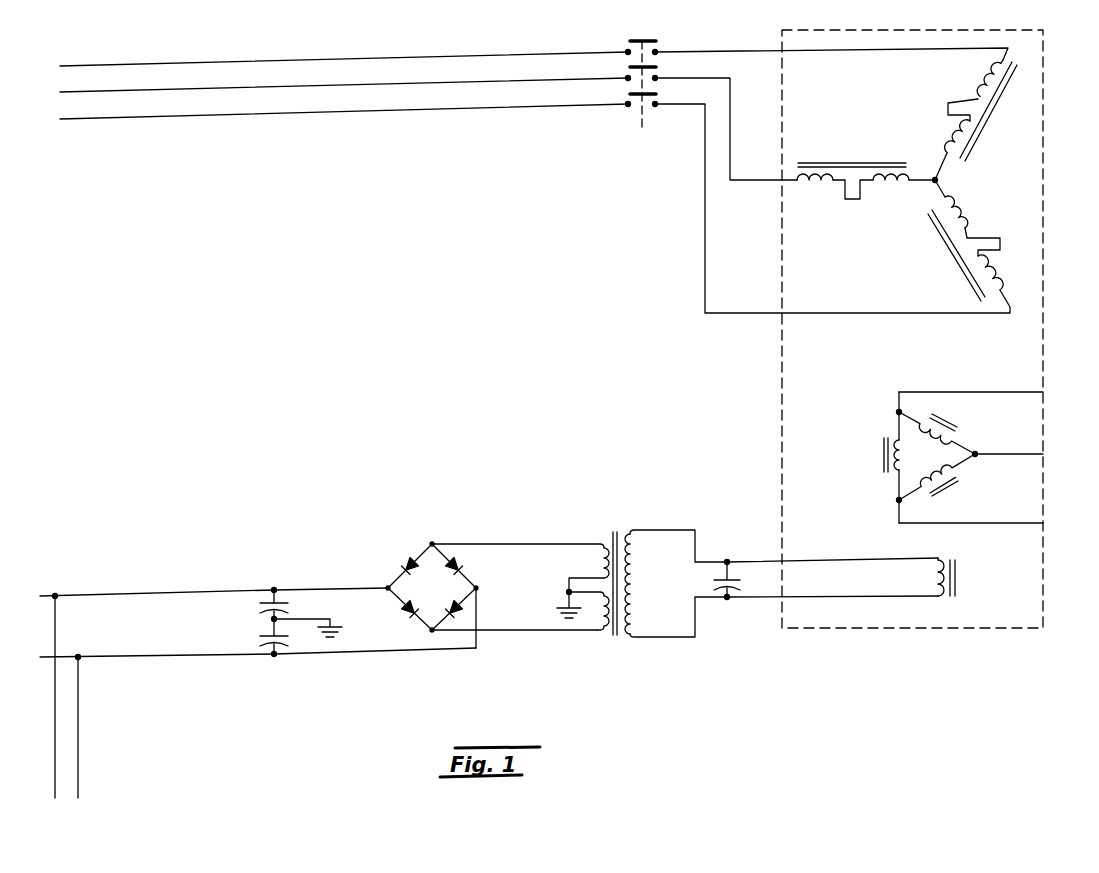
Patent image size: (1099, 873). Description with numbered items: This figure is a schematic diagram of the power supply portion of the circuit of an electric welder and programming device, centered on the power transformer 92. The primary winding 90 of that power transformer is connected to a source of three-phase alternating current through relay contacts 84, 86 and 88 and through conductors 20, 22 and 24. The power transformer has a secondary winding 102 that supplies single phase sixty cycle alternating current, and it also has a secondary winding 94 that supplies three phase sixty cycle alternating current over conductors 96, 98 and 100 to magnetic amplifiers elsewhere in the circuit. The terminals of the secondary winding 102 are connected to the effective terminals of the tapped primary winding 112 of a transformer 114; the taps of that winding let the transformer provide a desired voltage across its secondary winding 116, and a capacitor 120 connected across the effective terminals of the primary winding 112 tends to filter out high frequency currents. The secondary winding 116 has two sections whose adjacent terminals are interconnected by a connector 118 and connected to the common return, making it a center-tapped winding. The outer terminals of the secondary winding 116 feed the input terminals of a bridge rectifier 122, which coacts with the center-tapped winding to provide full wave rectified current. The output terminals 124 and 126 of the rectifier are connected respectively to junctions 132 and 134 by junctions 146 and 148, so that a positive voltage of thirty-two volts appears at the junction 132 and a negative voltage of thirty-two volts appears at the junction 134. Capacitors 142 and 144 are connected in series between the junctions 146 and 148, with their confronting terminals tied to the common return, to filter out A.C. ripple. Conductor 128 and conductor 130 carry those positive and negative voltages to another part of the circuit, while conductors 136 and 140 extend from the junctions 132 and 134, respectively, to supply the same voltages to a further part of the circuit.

The conductor 20 is at (60, 66).
The conductor 22 is at (60, 92).
The conductor 24 is at (60, 119).
The relay contact 84 is at (657, 50).
The relay contact 86 is at (657, 76).
The relay contact 88 is at (657, 102).
The primary winding 90 is at (925, 152).
The power transformer 92 is at (1041, 163).
The secondary winding 94 is at (1003, 434).
The conductor 96 is at (1043, 392).
The conductor 98 is at (1043, 454).
The conductor 100 is at (1043, 523).
The secondary winding 102 is at (975, 624).
The tapped primary winding 112 is at (640, 560).
The transformer 114 is at (618, 532).
The secondary winding 116 is at (604, 613).
The connector 118 is at (569, 578).
The capacitor 120 is at (713, 583).
The bridge rectifier 122 is at (452, 591).
The output terminal 124 is at (388, 588).
The output terminal 126 is at (478, 588).
The conductor 128 is at (46, 596).
The conductor 130 is at (46, 657).
The junction 132 is at (58, 599).
The junction 134 is at (81, 660).
The conductor 136 is at (55, 797).
The conductor 140 is at (81, 800).
The capacitor 142 is at (262, 606).
The capacitor 144 is at (262, 640).
The junction 146 is at (272, 588).
The junction 148 is at (274, 656).